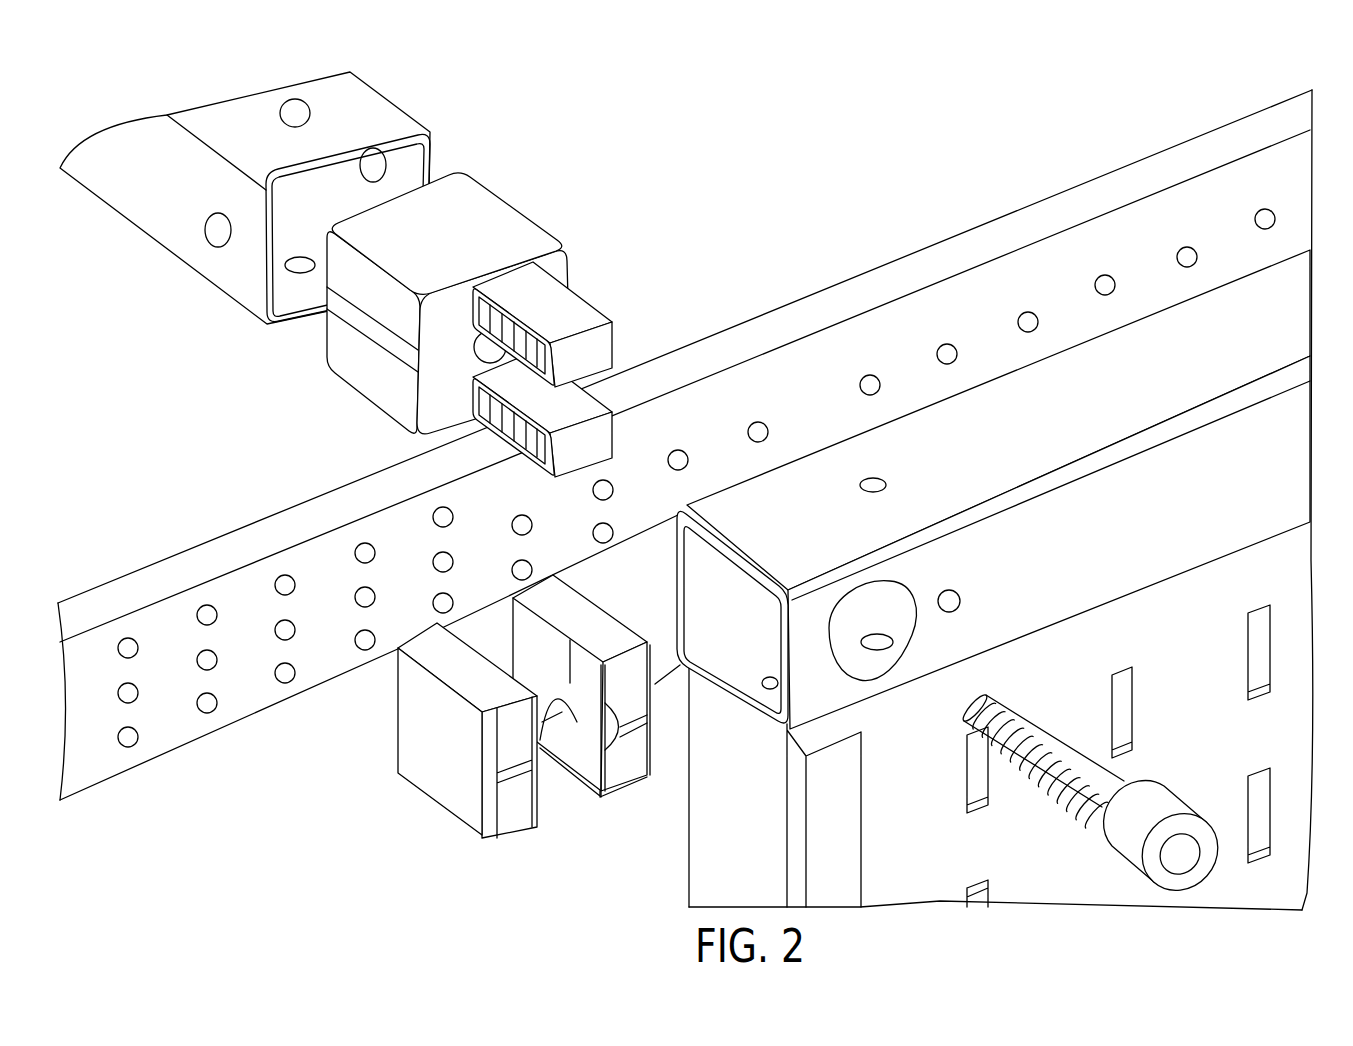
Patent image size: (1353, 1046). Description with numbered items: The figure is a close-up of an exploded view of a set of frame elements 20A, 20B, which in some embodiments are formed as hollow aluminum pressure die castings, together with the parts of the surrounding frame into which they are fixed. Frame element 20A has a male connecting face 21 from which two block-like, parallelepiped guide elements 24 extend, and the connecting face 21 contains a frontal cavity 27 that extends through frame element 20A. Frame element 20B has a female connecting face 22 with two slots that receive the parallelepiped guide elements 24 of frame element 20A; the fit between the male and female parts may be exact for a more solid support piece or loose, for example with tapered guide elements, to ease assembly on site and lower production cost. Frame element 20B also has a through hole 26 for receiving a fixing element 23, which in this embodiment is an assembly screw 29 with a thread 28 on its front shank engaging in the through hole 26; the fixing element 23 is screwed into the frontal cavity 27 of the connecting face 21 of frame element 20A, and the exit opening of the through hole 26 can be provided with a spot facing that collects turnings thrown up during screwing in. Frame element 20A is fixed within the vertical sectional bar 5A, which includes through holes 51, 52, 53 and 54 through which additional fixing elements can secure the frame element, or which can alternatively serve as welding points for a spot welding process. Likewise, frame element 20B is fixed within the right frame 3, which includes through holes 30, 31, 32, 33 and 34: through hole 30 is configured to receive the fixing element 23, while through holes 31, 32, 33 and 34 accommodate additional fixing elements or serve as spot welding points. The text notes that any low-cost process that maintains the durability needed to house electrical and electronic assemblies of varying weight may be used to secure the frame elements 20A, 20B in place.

The right frame 3 is at (1298, 324).
The vertical sectional bar 5A is at (243, 102).
The through hole 51 is at (300, 97).
The through hole 52 is at (387, 163).
The through hole 53 is at (298, 273).
The through hole 54 is at (213, 246).
The frame element 20A is at (448, 297).
The male connecting face 21 is at (457, 395).
The female connecting face 22 is at (423, 627).
The parallelepiped guide elements 24 is at (564, 369).
The frontal cavity 27 is at (578, 338).
The frame element 20B is at (469, 650).
The through hole 26 is at (688, 666).
The through hole 34 is at (768, 690).
The through hole 30 is at (879, 672).
The through hole 33 is at (877, 634).
The through hole 31 is at (866, 478).
The through hole 32 is at (960, 600).
The thread 28 is at (1040, 714).
The fixing element 23 is at (1096, 798).
The assembly screw 29 is at (1167, 807).